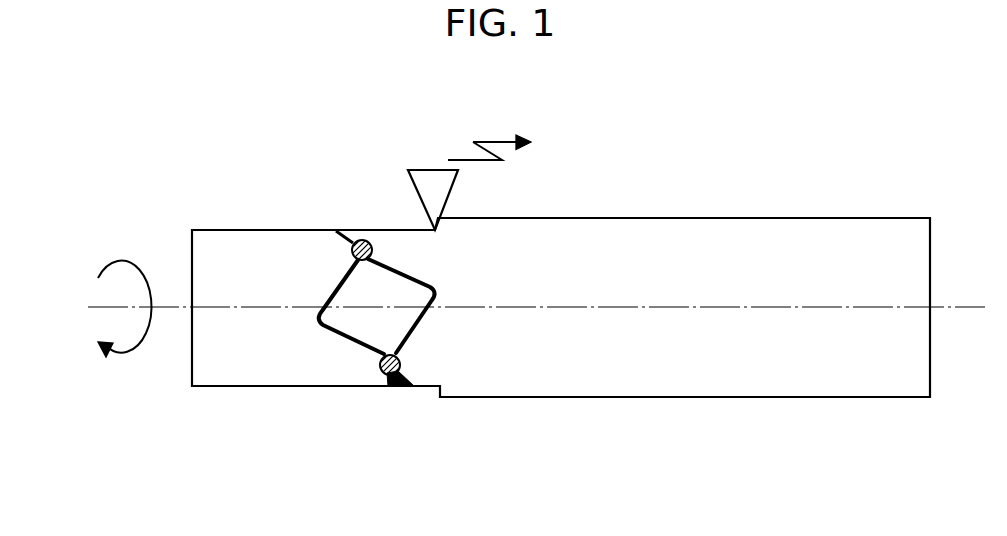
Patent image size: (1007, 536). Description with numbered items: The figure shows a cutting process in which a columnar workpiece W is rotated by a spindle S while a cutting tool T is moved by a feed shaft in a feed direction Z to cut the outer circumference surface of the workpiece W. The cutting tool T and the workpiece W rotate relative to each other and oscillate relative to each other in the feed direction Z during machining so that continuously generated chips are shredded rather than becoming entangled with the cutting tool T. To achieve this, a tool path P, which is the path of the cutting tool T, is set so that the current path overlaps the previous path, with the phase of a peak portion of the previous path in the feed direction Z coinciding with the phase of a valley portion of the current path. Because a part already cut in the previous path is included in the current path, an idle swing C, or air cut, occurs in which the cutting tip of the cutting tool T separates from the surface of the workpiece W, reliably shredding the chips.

The workpiece W is at (828, 218).
The cutting tool T is at (430, 170).
The feed direction Z is at (497, 142).
The spindle S is at (98, 308).
The tool path P is at (323, 330).
The idle swing C is at (351, 250).